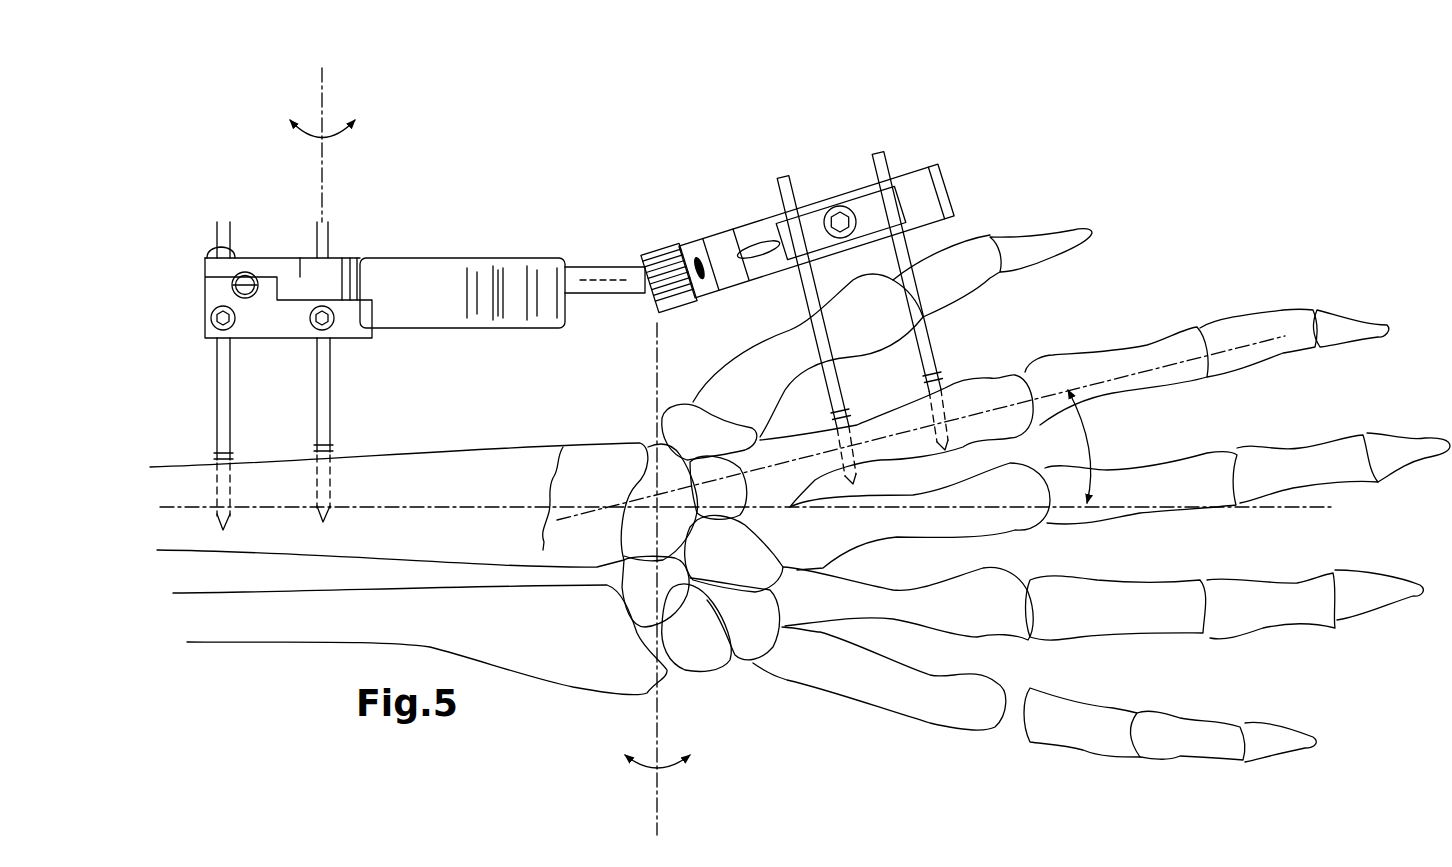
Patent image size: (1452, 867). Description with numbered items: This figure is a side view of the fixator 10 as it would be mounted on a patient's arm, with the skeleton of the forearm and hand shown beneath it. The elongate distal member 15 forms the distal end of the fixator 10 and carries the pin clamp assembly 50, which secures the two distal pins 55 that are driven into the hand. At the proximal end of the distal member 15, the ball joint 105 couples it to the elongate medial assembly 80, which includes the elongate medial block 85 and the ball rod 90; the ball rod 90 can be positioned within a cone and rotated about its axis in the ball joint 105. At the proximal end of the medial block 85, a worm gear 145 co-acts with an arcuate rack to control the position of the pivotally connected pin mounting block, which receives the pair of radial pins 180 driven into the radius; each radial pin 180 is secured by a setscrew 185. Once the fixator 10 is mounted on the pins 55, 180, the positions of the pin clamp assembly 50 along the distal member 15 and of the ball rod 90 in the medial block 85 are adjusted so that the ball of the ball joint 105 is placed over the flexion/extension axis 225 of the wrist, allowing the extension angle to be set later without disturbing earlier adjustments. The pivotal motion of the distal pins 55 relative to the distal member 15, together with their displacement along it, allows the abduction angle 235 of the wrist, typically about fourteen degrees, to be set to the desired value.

The fixator 10 is at (498, 186).
The distal member 15 is at (723, 243).
The pin clamp assembly 50 is at (812, 208).
The distal pins 55 is at (849, 388).
The medial assembly 80 is at (551, 255).
The medial block 85 is at (376, 256).
The ball rod 90 is at (604, 296).
The ball joint 105 is at (656, 250).
The worm gear 145 is at (252, 274).
The radial pins 180 is at (318, 381).
The setscrew 185 is at (307, 327).
The flexion/extension axis 225 is at (660, 792).
The abduction angle 235 is at (1090, 445).